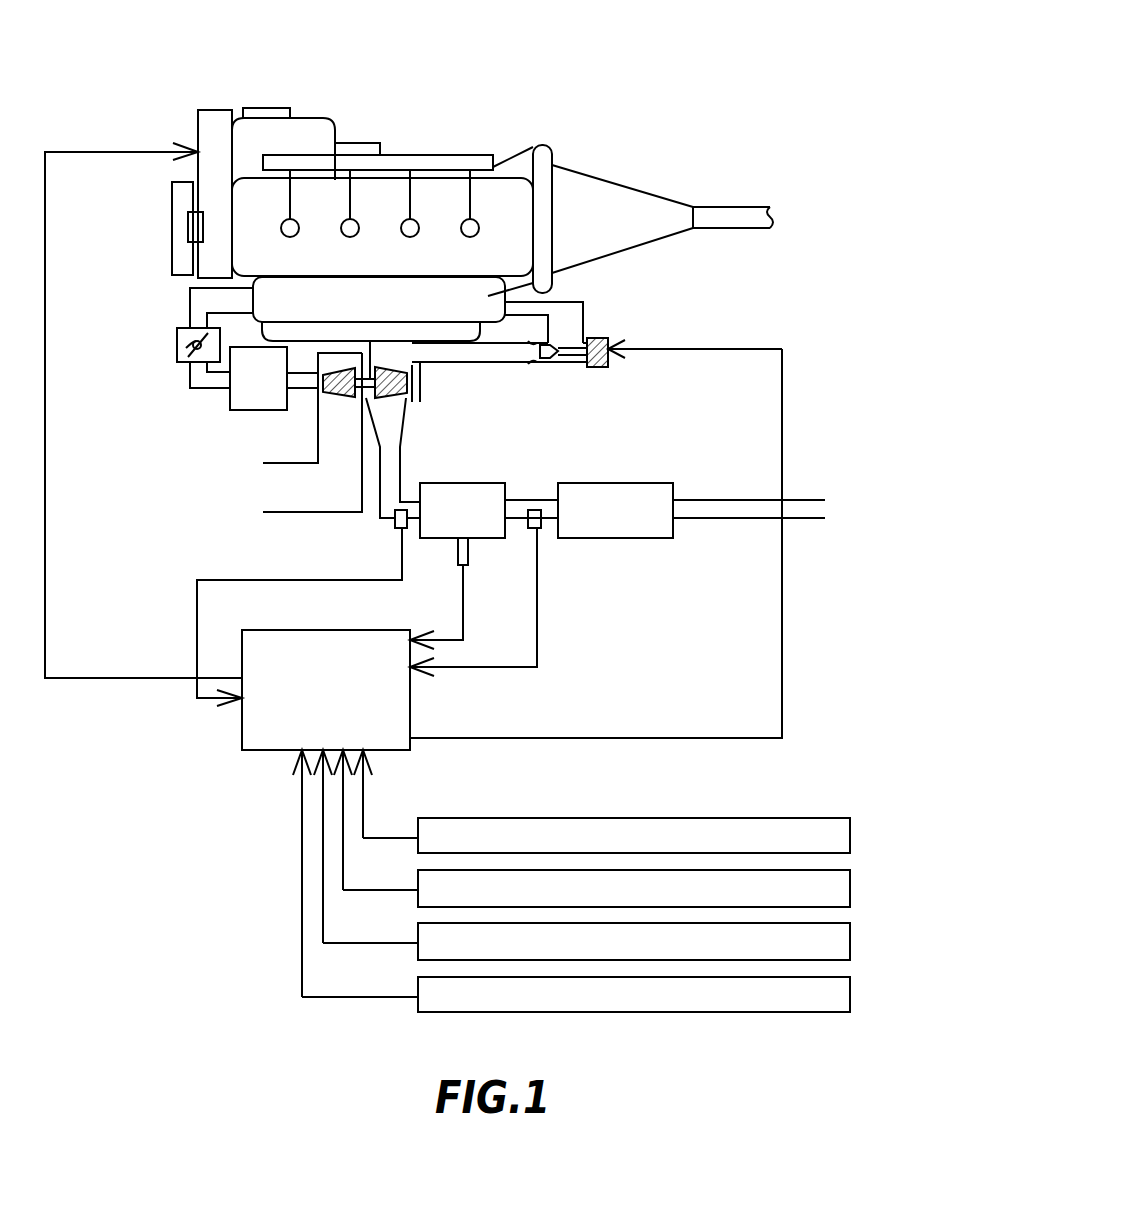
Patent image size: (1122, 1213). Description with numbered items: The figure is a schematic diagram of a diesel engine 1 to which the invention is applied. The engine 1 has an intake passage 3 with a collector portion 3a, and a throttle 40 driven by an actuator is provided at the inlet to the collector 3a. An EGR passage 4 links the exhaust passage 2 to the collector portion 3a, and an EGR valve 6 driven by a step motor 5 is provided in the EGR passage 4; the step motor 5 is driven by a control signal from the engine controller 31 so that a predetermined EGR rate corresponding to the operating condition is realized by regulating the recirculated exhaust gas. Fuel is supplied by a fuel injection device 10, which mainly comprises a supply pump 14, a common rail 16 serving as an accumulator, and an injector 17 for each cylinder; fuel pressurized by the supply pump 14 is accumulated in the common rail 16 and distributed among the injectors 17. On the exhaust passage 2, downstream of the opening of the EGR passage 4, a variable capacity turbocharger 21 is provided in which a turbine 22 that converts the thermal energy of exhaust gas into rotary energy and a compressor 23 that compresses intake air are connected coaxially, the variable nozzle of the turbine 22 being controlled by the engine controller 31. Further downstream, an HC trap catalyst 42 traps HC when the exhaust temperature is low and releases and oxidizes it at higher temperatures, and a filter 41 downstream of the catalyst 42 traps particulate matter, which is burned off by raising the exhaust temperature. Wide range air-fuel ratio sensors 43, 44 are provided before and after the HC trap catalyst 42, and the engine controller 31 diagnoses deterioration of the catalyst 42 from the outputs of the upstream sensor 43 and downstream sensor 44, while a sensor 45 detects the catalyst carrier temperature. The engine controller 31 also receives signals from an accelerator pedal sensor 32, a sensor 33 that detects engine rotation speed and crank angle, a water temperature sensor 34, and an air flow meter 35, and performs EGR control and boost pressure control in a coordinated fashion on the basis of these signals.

The diesel engine 1 is at (501, 128).
The fuel injection device 10 is at (428, 97).
The supply pump 14 is at (310, 118).
The common rail 16 is at (397, 155).
The injector 17 is at (462, 218).
The intake passage 3 is at (190, 305).
The collector portion 3a is at (507, 282).
The throttle 40 is at (177, 345).
The variable capacity turbocharger 21 is at (321, 394).
The turbine 22 is at (392, 397).
The compressor 23 is at (343, 400).
The exhaust passage 2 is at (403, 468).
The EGR passage 4 is at (583, 312).
The step motor 5 is at (600, 367).
The EGR valve 6 is at (548, 362).
The filter 41 is at (647, 483).
The HC trap catalyst 42 is at (481, 483).
The wide range air-fuel ratio sensor 43 is at (393, 522).
The wide range air-fuel ratio sensor 44 is at (528, 528).
The sensor 45 is at (457, 548).
The engine controller 31 is at (368, 630).
The accelerator pedal sensor 32 is at (850, 836).
The sensor 33 is at (850, 889).
The water temperature sensor 34 is at (850, 942).
The air flow meter 35 is at (850, 996).